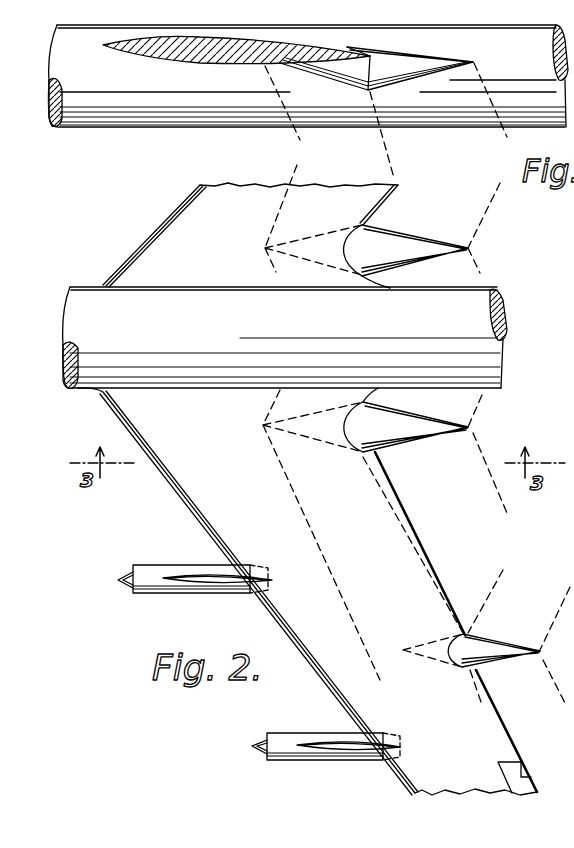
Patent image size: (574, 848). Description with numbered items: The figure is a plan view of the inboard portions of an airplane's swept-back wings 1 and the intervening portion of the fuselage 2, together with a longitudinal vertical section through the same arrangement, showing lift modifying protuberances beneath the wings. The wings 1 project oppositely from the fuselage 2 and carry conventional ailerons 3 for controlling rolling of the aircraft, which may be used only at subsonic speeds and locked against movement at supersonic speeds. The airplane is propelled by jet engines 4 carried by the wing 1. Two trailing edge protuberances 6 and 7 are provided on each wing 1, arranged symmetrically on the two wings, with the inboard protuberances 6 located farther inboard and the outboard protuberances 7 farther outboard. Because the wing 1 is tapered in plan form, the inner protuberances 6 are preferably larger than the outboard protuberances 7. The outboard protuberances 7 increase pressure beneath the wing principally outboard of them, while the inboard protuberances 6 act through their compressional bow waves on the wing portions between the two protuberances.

In FIG. 3, the swept-back wing 1 is at (170, 52).
In FIG. 2, the swept-back wing 1 is at (157, 253).
In FIG. 3, the fuselage 2 is at (193, 107).
In FIG. 2, the fuselage 2 is at (200, 334).
In FIG. 2, the aileron 3 is at (522, 768).
In FIG. 2, the jet engine 4 is at (158, 569).
In FIG. 3, the inboard trailing edge protuberance 6 is at (407, 73).
In FIG. 2, the inboard trailing edge protuberance 6 is at (398, 242).
In FIG. 2, the outboard trailing edge protuberance 7 is at (487, 646).